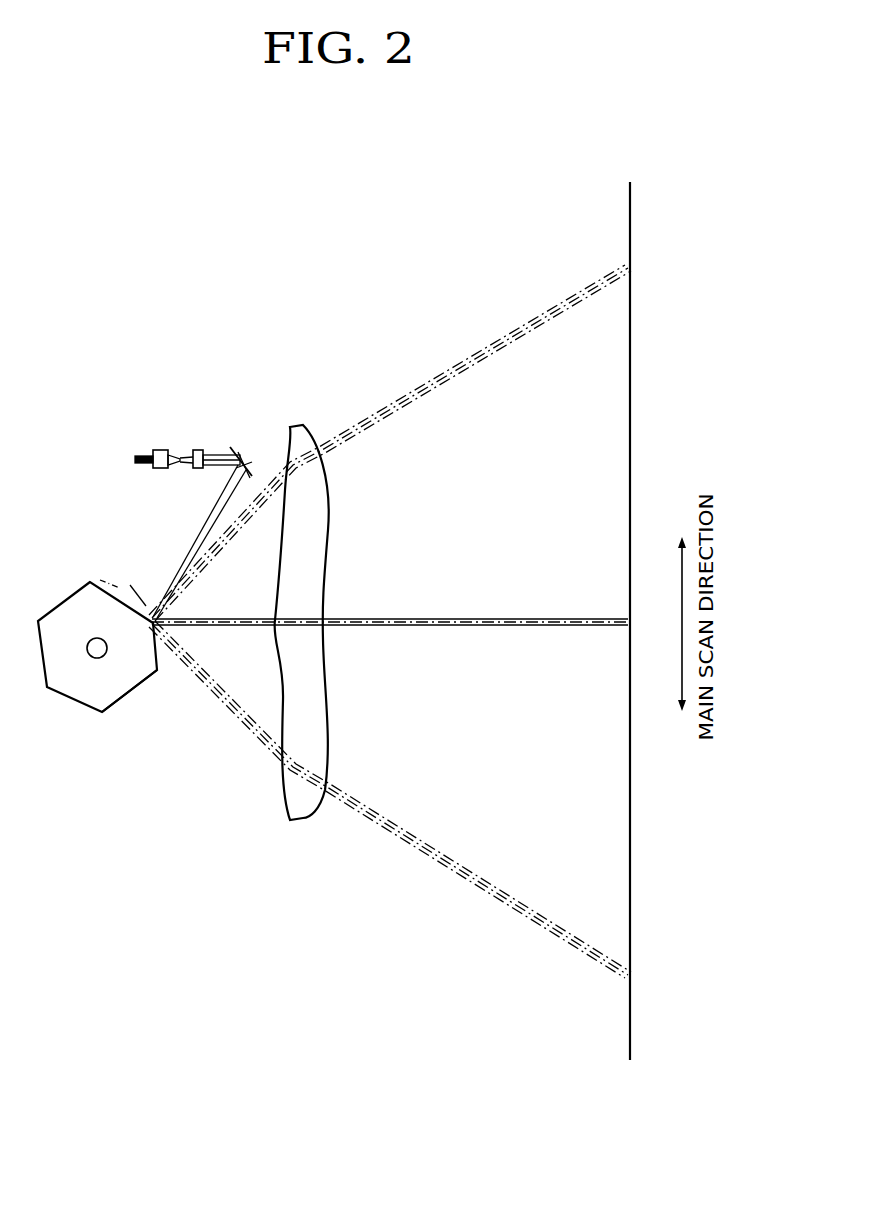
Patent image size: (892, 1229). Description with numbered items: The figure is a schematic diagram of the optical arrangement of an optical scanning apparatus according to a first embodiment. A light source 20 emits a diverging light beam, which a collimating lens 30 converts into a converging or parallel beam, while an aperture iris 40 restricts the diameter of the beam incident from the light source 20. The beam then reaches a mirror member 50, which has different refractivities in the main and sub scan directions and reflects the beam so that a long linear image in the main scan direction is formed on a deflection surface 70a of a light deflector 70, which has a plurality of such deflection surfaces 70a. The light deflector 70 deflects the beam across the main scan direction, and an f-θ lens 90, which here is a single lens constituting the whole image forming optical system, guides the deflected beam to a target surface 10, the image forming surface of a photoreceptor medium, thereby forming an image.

The target surface 10 is at (631, 226).
The light source 20 is at (157, 450).
The collimating lens 30 is at (200, 450).
The aperture iris 40 is at (218, 452).
The mirror member 50 is at (243, 447).
The light deflector 70 is at (60, 732).
The deflection surface 70a is at (130, 693).
The f-θ lens 90 is at (305, 428).